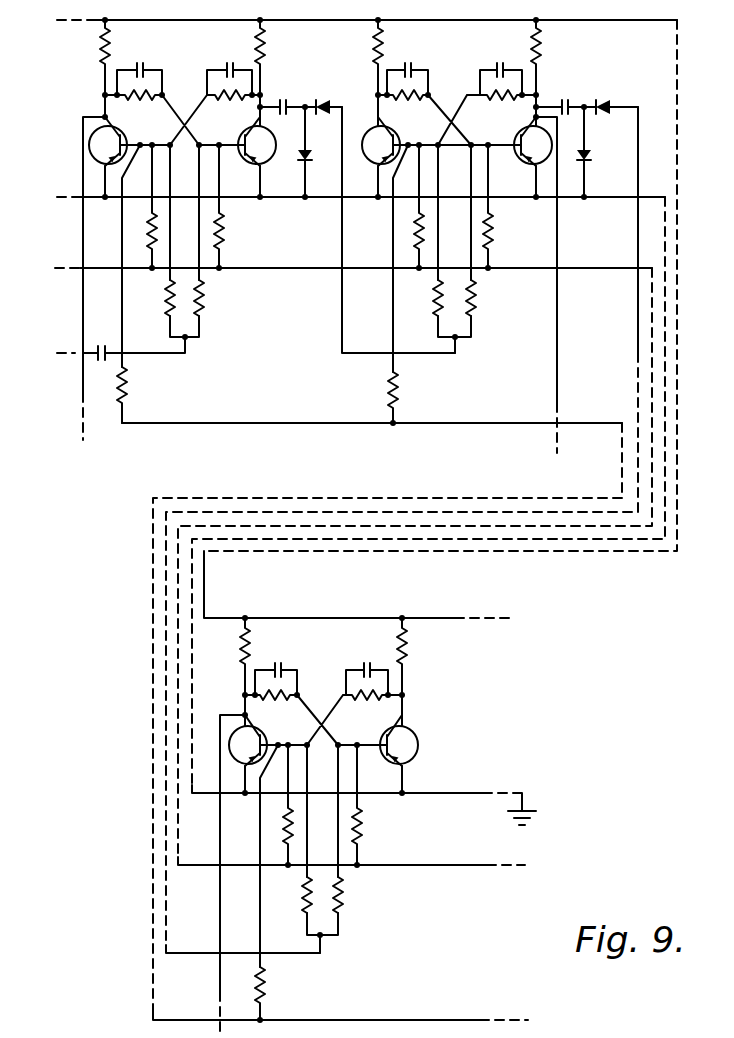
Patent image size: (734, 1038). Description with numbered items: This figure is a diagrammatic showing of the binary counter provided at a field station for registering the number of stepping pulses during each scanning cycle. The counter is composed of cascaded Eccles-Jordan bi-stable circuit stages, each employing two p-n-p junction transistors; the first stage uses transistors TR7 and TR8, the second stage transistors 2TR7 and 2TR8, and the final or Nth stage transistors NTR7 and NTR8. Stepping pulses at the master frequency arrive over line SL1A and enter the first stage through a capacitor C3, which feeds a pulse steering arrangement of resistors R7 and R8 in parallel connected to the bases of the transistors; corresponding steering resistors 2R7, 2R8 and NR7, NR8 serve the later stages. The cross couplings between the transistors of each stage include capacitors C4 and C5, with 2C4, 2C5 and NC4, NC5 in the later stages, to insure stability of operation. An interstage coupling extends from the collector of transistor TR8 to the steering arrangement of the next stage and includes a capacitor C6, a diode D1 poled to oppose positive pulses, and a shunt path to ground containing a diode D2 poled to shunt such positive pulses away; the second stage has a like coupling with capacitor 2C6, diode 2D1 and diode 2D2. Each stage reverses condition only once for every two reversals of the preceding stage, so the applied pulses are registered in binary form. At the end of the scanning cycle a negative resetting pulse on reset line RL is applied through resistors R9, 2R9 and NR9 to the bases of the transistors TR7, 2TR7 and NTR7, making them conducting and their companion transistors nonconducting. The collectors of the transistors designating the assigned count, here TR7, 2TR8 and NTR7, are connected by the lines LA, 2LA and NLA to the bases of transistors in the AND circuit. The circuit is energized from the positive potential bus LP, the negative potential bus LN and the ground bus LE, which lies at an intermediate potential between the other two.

The cross-coupling capacitor C4 is at (158, 54).
The cross-coupling capacitor C5 is at (226, 63).
The interstage coupling capacitor C6 is at (284, 99).
The input capacitor C3 is at (110, 338).
The interstage coupling diode D1 is at (316, 99).
The shunt diode D2 is at (310, 162).
The transistor TR7 is at (114, 127).
The transistor TR8 is at (254, 127).
The steering resistor R7 is at (170, 300).
The steering resistor R8 is at (200, 300).
The reset resistor R9 is at (125, 388).
The output line LA is at (84, 251).
The stepping pulse line SL1A is at (68, 354).
The reset line RL is at (288, 422).
The cross-coupling capacitor 2C4 is at (420, 55).
The cross-coupling capacitor 2C5 is at (503, 62).
The interstage coupling capacitor 2C6 is at (575, 88).
The interstage coupling diode 2D1 is at (600, 99).
The shunt diode 2D2 is at (592, 162).
The transistor 2TR7 is at (386, 127).
The transistor 2TR8 is at (528, 127).
The steering resistor 2R7 is at (438, 300).
The steering resistor 2R8 is at (471, 300).
The reset resistor 2R9 is at (395, 388).
The output line 2LA is at (558, 385).
The negative potential bus LN is at (500, 619).
The ground potential bus LE is at (505, 794).
The positive potential bus LP is at (505, 866).
The cross-coupling capacitor NC4 is at (290, 652).
The cross-coupling capacitor NC5 is at (366, 663).
The transistor NTR7 is at (250, 727).
The transistor NTR8 is at (396, 727).
The steering resistor NR7 is at (306, 908).
The steering resistor NR8 is at (340, 908).
The reset resistor NR9 is at (263, 985).
The output line NLA is at (220, 992).